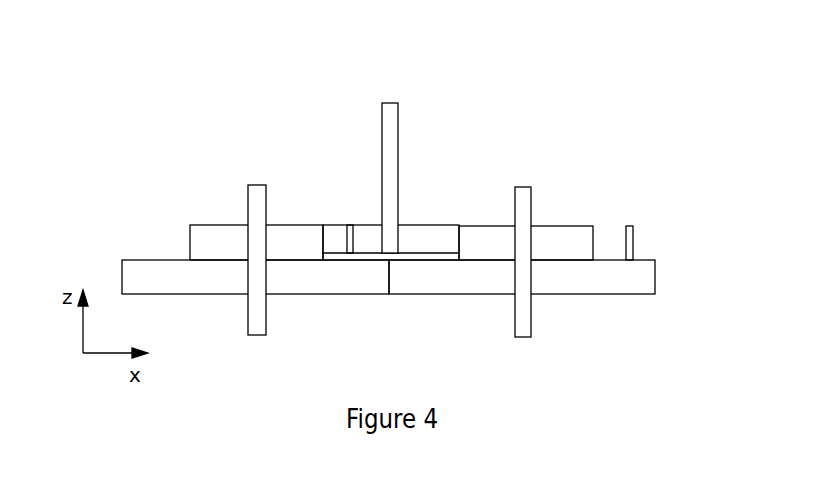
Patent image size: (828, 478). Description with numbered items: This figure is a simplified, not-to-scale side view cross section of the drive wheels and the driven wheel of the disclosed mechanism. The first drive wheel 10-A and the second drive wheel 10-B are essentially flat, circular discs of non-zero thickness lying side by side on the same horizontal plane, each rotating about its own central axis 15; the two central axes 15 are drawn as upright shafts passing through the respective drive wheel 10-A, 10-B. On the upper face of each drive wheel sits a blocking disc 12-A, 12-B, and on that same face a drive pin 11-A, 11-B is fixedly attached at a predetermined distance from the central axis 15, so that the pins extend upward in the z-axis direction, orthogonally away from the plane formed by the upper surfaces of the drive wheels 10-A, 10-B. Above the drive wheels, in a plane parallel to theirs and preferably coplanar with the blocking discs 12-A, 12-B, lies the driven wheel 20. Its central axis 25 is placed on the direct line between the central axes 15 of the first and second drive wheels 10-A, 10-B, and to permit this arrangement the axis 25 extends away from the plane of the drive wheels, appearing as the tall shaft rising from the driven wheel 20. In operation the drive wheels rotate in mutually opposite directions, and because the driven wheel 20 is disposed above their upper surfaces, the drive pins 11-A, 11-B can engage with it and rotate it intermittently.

The first drive wheel 10-A is at (156, 266).
The second drive wheel 10-B is at (641, 265).
The blocking disc 12-A is at (220, 236).
The blocking disc 12-B is at (562, 232).
The drive pin 11-A is at (351, 224).
The drive pin 11-B is at (628, 227).
The central axis 15 is at (254, 188).
The driven wheel 20 is at (432, 237).
The central axis of the driven wheel 25 is at (385, 113).